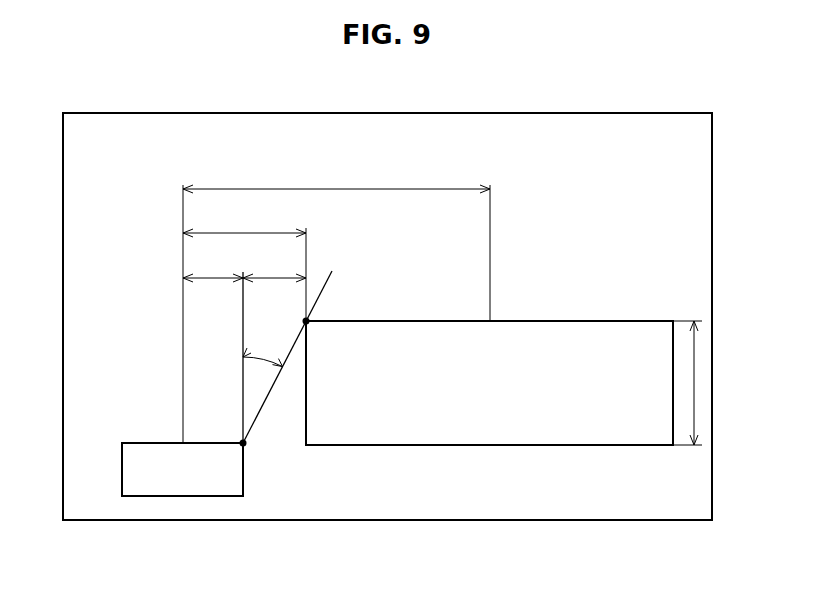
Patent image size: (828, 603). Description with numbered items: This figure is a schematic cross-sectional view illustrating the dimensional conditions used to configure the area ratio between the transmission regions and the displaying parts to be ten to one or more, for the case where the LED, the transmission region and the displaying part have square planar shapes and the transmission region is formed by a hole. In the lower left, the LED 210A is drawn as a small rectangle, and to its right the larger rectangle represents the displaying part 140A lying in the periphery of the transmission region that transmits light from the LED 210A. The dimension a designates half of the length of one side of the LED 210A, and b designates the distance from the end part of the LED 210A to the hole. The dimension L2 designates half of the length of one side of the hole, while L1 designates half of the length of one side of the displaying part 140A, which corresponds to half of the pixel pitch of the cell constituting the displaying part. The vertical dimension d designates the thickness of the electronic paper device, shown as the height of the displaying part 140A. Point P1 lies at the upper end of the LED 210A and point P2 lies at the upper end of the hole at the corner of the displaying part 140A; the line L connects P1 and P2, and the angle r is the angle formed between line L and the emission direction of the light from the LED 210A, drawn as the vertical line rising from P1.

The displaying part 140A is at (490, 446).
The LED 210A is at (183, 496).
The line L is at (333, 274).
The point at the upper end of the LED P1 is at (246, 446).
The point at the upper end of the hole P2 is at (309, 319).
The half length of one side of the displaying part L1 is at (336, 178).
The half length of one side of the hole L2 is at (244, 223).
The half length of one side of the LED a is at (213, 267).
The distance from the end part of the LED to the hole b is at (274, 267).
The angle r is at (263, 350).
The thickness of the electronic paper device d is at (687, 383).